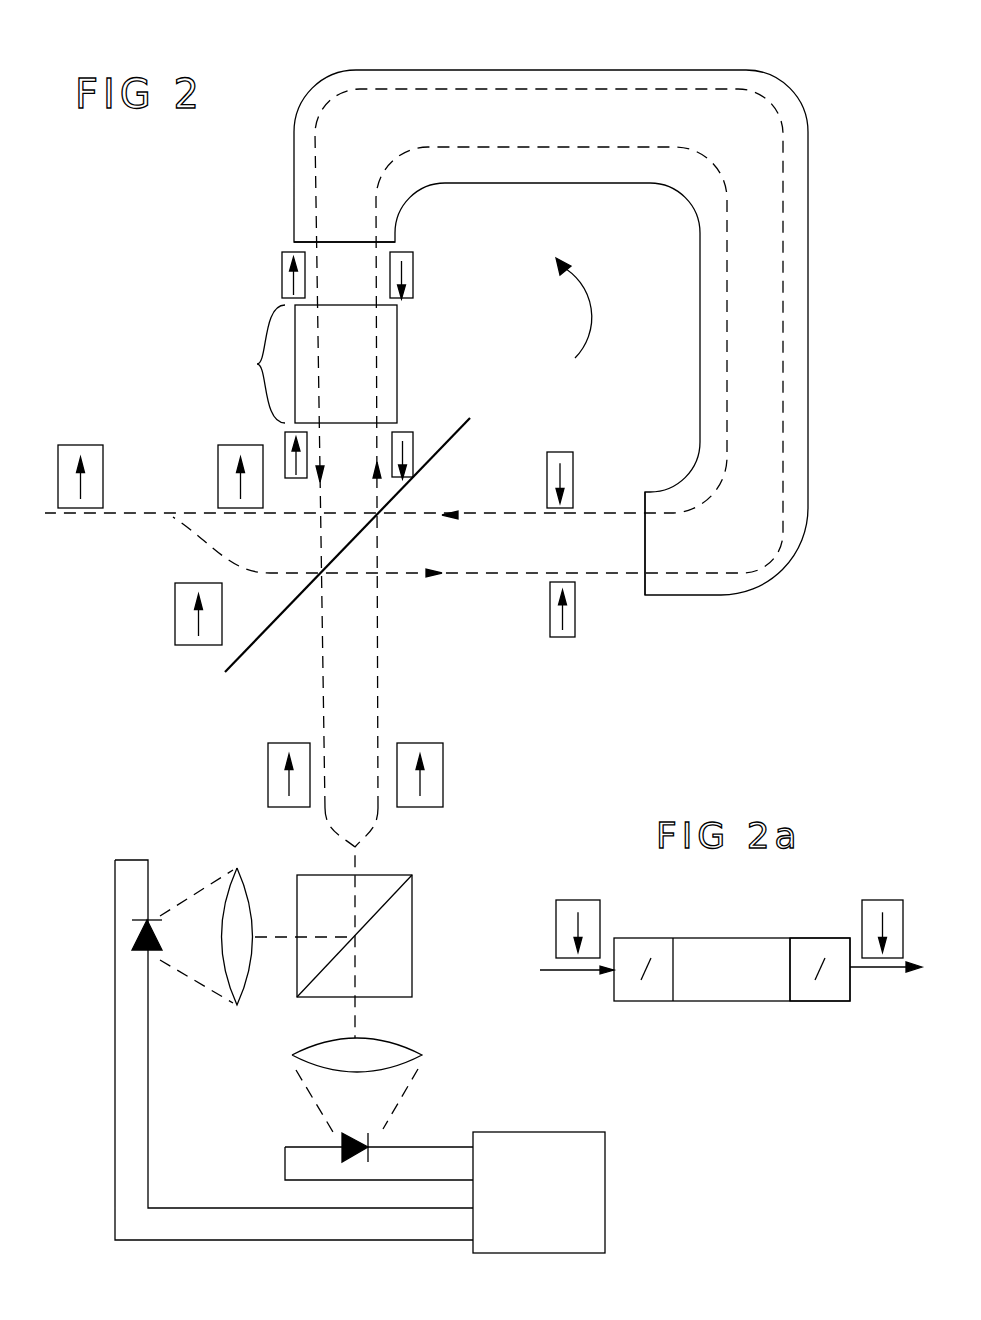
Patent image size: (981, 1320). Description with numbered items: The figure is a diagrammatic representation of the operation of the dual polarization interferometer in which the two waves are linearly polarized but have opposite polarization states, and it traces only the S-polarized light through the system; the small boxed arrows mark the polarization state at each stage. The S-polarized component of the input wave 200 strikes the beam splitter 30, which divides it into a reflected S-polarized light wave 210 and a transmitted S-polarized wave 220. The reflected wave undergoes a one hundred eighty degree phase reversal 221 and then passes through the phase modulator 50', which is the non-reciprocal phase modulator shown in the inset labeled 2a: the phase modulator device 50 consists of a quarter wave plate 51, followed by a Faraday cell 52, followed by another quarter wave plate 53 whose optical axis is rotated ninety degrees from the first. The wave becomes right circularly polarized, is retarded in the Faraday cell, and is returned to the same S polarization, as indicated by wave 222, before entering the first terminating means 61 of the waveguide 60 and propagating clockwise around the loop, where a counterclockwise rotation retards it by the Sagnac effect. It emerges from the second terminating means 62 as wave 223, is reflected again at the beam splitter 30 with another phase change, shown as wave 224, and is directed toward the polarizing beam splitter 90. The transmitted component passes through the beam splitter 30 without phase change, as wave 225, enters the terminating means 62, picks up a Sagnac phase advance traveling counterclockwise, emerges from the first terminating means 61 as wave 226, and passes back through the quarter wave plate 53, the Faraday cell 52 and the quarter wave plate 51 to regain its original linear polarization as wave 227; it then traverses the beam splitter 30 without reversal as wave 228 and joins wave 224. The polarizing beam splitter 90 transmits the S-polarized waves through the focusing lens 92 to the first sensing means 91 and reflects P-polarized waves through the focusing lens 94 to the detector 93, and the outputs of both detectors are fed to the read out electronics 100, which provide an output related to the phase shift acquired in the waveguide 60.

In FIG. 2, the waveguide 60 is at (580, 70).
In FIG. 2, the first terminating means 61 is at (293, 242).
In FIG. 2, the second terminating means 62 is at (645, 585).
In FIG. 2, the beam splitter 30 is at (447, 442).
In FIG. 2, the phase modulator 50' is at (373, 364).
In FIG. 2A, the phase modulator device 50 is at (732, 946).
In FIG. 2A, the quarter wave plate 51 is at (653, 993).
In FIG. 2A, the Faraday cell 52 is at (718, 992).
In FIG. 2A, the quarter wave plate 53 is at (813, 992).
In FIG. 2, the polarizing beam splitter 90 is at (390, 875).
In FIG. 2, the first sensing means 91 is at (428, 1141).
In FIG. 2, the focusing lens 92 is at (407, 1042).
In FIG. 2, the detector 93 is at (203, 884).
In FIG. 2, the focusing lens 94 is at (240, 878).
In FIG. 2, the read out electronics 100 is at (605, 1135).
In FIG. 2, the phase modulator representation 2a is at (253, 364).
In FIG. 2, the S-polarized component of the input wave 200 is at (73, 445).
In FIG. 2, the reflected S-polarized light wave 210 is at (218, 470).
In FIG. 2A, the reflected S-polarized light wave 210 is at (600, 905).
In FIG. 2, the transmitted S-polarized wave 220 is at (175, 607).
In FIG. 2, the 180° phase reversal 221 is at (413, 442).
In FIG. 2A, the 180° phase reversal 221 is at (862, 905).
In FIG. 2, the S-polarized wave 222 is at (413, 268).
In FIG. 2, the emerging reflected wave 223 is at (573, 478).
In FIG. 2, the phase-changed reflected wave 224 is at (443, 770).
In FIG. 2, the transmitted wave without phase change 225 is at (550, 608).
In FIG. 2, the transmitted wave emerging from first terminating means 226 is at (282, 283).
In FIG. 2, the wave returned to original linear polarization 227 is at (285, 443).
In FIG. 2, the transmitted wave without phase reversal 228 is at (268, 757).